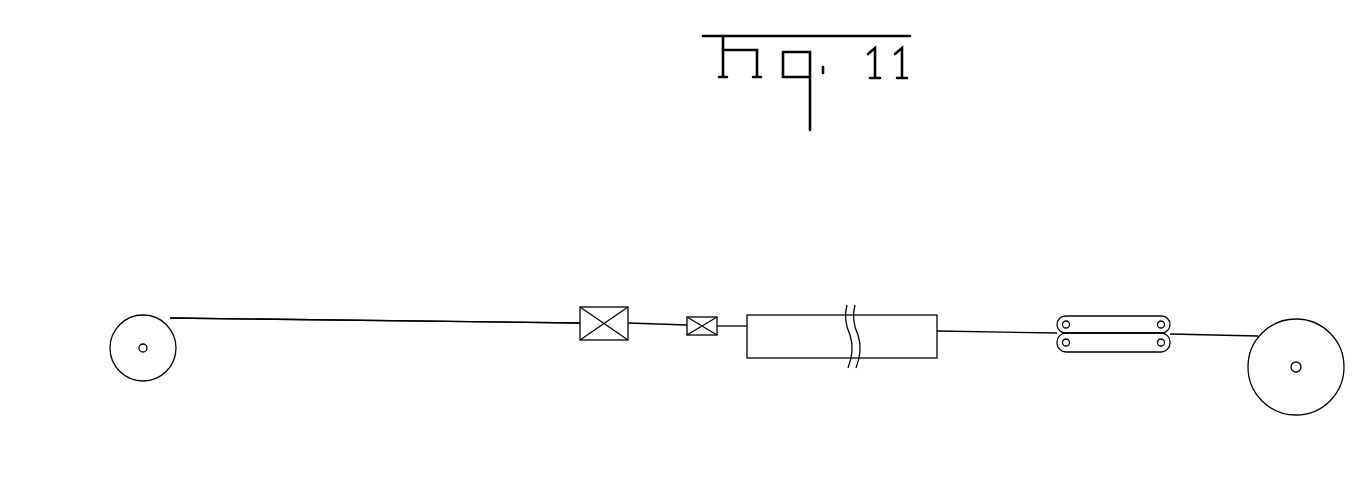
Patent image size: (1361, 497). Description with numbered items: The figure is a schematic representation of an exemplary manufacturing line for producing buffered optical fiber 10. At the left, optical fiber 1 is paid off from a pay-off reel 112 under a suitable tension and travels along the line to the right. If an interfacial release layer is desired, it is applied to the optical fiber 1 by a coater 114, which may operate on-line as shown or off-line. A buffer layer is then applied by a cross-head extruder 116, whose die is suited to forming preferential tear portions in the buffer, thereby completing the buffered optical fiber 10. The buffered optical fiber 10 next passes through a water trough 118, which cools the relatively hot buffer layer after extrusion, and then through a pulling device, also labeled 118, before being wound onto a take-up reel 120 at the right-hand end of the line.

The optical fiber 1 is at (228, 317).
The buffered optical fiber 10 is at (733, 325).
The pay-off reel 112 is at (137, 318).
The coater 114 is at (602, 340).
The cross-head extruder 116 is at (700, 317).
The water trough 118 is at (880, 320).
The take-up reel 120 is at (1313, 318).